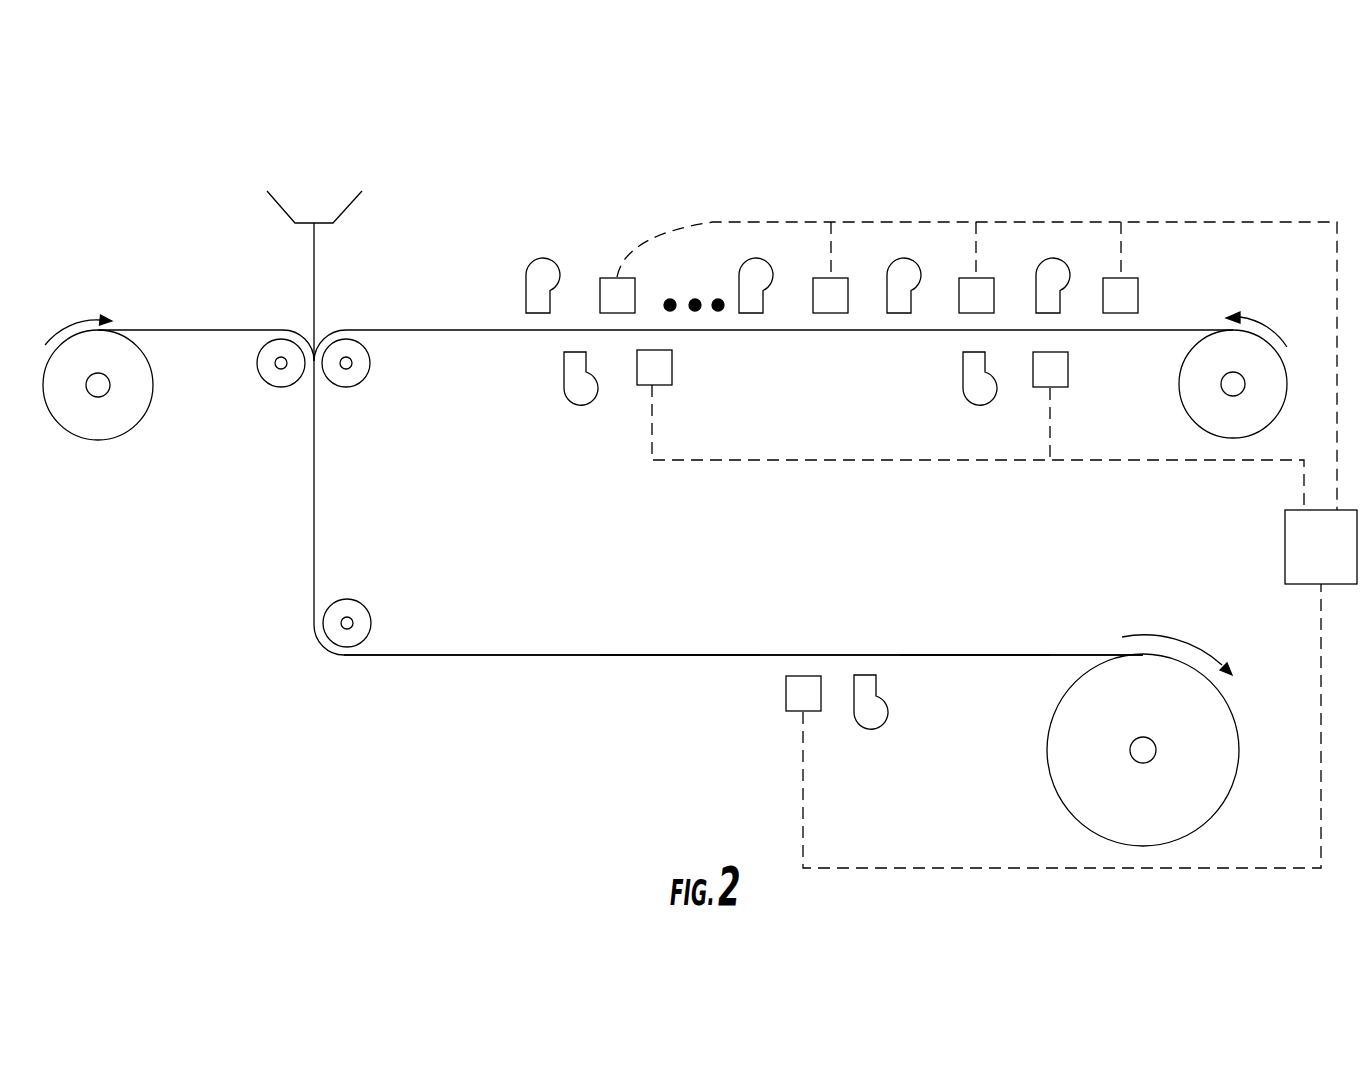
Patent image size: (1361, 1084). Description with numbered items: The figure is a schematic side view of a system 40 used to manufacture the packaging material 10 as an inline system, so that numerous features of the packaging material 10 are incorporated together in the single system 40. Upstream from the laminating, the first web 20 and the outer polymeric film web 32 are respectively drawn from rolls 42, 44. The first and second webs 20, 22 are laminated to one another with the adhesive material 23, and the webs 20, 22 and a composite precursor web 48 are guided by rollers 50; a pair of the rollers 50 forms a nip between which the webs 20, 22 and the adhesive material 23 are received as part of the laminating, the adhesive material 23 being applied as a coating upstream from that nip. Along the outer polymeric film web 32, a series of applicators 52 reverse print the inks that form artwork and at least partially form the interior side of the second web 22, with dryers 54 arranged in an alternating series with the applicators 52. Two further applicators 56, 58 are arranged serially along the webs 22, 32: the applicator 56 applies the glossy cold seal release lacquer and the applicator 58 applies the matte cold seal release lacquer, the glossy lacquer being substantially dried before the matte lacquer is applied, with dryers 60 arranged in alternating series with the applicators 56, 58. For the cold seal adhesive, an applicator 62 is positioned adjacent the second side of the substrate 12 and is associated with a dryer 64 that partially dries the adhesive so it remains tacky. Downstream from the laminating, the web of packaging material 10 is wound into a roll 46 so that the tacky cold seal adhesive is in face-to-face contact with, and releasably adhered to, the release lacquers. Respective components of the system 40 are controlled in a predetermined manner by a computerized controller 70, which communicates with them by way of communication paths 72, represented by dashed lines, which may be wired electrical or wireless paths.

The packaging material 10 is at (968, 645).
The substrate 12 is at (662, 655).
The first web 20 is at (205, 328).
The second web 22 is at (470, 320).
The adhesive material 23 is at (315, 262).
The outer polymeric film web 32 is at (1187, 330).
The system 40 is at (1158, 124).
The roll 42 is at (95, 440).
The roll 44 is at (1180, 405).
The roll 46 is at (1053, 792).
The composite precursor web 48 is at (530, 655).
The rollers 50 is at (262, 376).
The applicators 52 is at (636, 298).
The dryers 54 is at (560, 282).
The applicator 56 is at (1069, 370).
The applicator 58 is at (673, 372).
The dryers 60 is at (598, 397).
The applicator 62 is at (785, 690).
The dryer 64 is at (888, 722).
The computerized controller 70 is at (1333, 560).
The communication paths 72 is at (1297, 222).